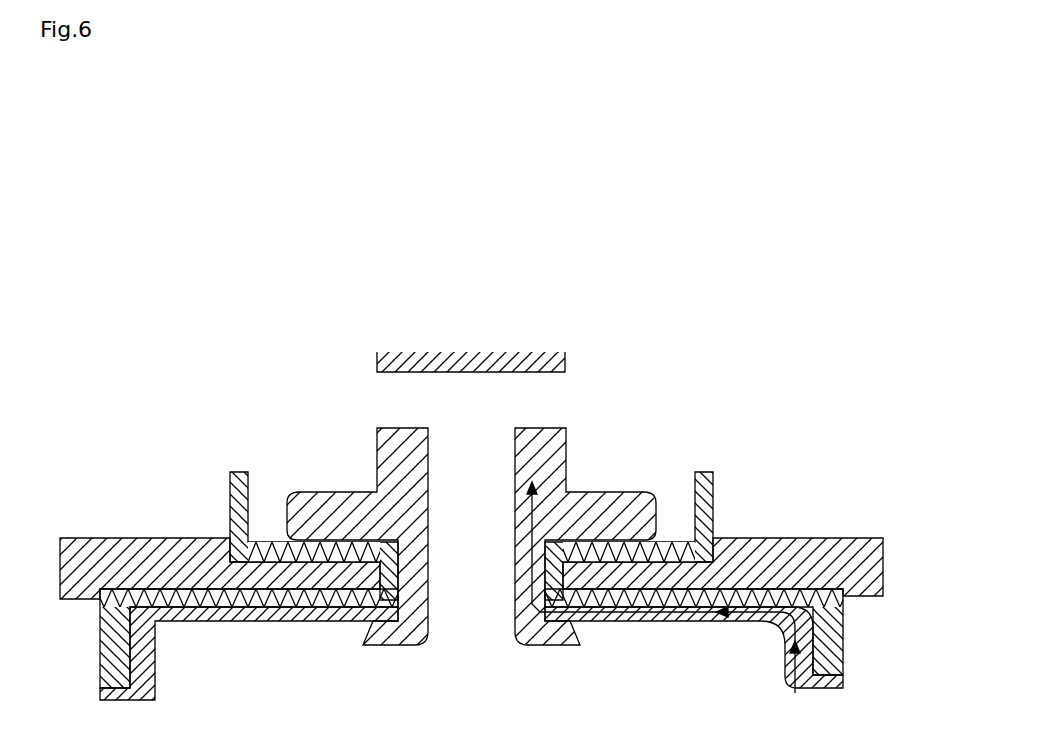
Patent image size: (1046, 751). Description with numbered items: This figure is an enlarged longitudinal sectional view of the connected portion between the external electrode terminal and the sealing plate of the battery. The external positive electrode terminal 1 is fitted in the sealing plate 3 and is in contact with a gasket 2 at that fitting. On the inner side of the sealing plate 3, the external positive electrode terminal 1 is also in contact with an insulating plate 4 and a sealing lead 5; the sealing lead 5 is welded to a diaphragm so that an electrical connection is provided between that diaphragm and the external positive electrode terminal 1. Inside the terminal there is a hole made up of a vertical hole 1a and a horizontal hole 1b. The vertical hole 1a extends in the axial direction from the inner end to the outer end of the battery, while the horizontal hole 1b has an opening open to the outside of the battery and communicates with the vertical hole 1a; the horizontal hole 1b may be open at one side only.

The external positive electrode terminal 1 is at (380, 353).
The vertical hole 1a is at (500, 478).
The horizontal hole 1b is at (468, 405).
The gasket 2 is at (242, 472).
The sealing plate 3 is at (140, 558).
The insulating plate 4 is at (108, 626).
The sealing lead 5 is at (148, 684).